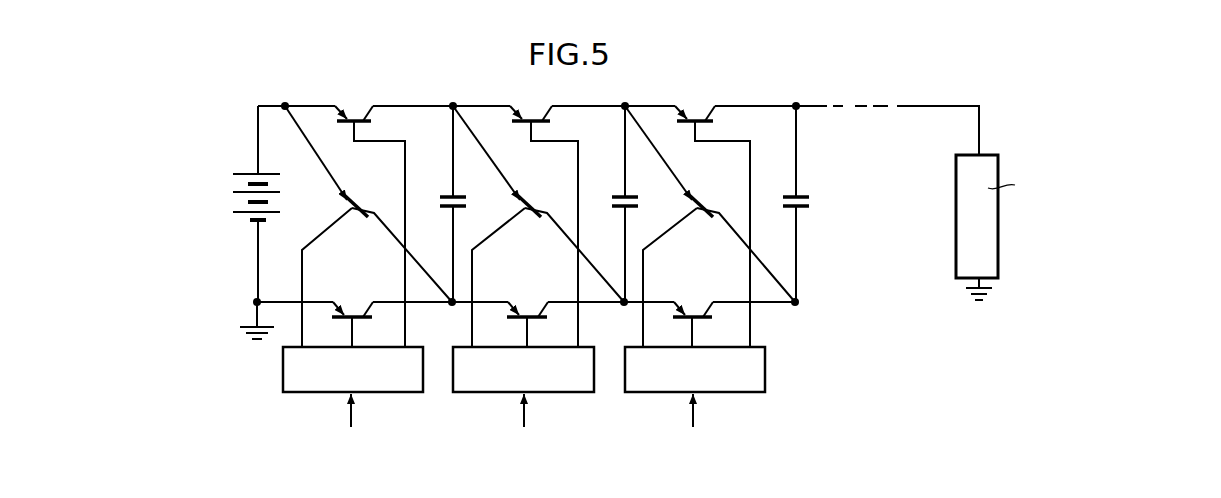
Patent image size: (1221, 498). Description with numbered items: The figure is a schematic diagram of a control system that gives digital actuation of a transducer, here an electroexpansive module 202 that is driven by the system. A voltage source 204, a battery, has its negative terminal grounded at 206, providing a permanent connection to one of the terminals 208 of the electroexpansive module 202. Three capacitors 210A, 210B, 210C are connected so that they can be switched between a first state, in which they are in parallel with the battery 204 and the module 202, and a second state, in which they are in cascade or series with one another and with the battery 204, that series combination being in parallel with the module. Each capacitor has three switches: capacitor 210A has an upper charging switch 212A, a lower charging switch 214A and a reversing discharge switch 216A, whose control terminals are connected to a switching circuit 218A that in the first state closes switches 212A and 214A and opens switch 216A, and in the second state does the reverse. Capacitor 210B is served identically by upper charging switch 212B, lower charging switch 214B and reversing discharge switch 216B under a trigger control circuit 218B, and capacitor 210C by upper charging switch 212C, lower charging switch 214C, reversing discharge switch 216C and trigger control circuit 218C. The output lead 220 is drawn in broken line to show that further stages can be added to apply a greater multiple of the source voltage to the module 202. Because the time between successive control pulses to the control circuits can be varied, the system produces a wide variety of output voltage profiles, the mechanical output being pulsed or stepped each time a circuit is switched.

The electroexpansive module 202 is at (989, 254).
The voltage source 204 is at (234, 211).
The ground 206 is at (256, 315).
The terminal of module 208 is at (985, 285).
The capacitor 210A is at (463, 208).
The capacitor 210B is at (635, 208).
The capacitor 210C is at (805, 208).
The upper charging switch 212A is at (361, 107).
The upper charging switch 212B is at (543, 97).
The upper charging switch 212C is at (707, 97).
The lower charging switch 214A is at (355, 305).
The lower charging switch 214B is at (537, 305).
The lower charging switch 214C is at (702, 305).
The reversing discharge switch 216A is at (371, 214).
The reversing discharge switch 216B is at (540, 215).
The reversing discharge switch 216C is at (710, 215).
The switching circuit 218A is at (399, 392).
The trigger control circuit 218B is at (562, 392).
The trigger control circuit 218C is at (724, 392).
The output lead 220 is at (858, 106).